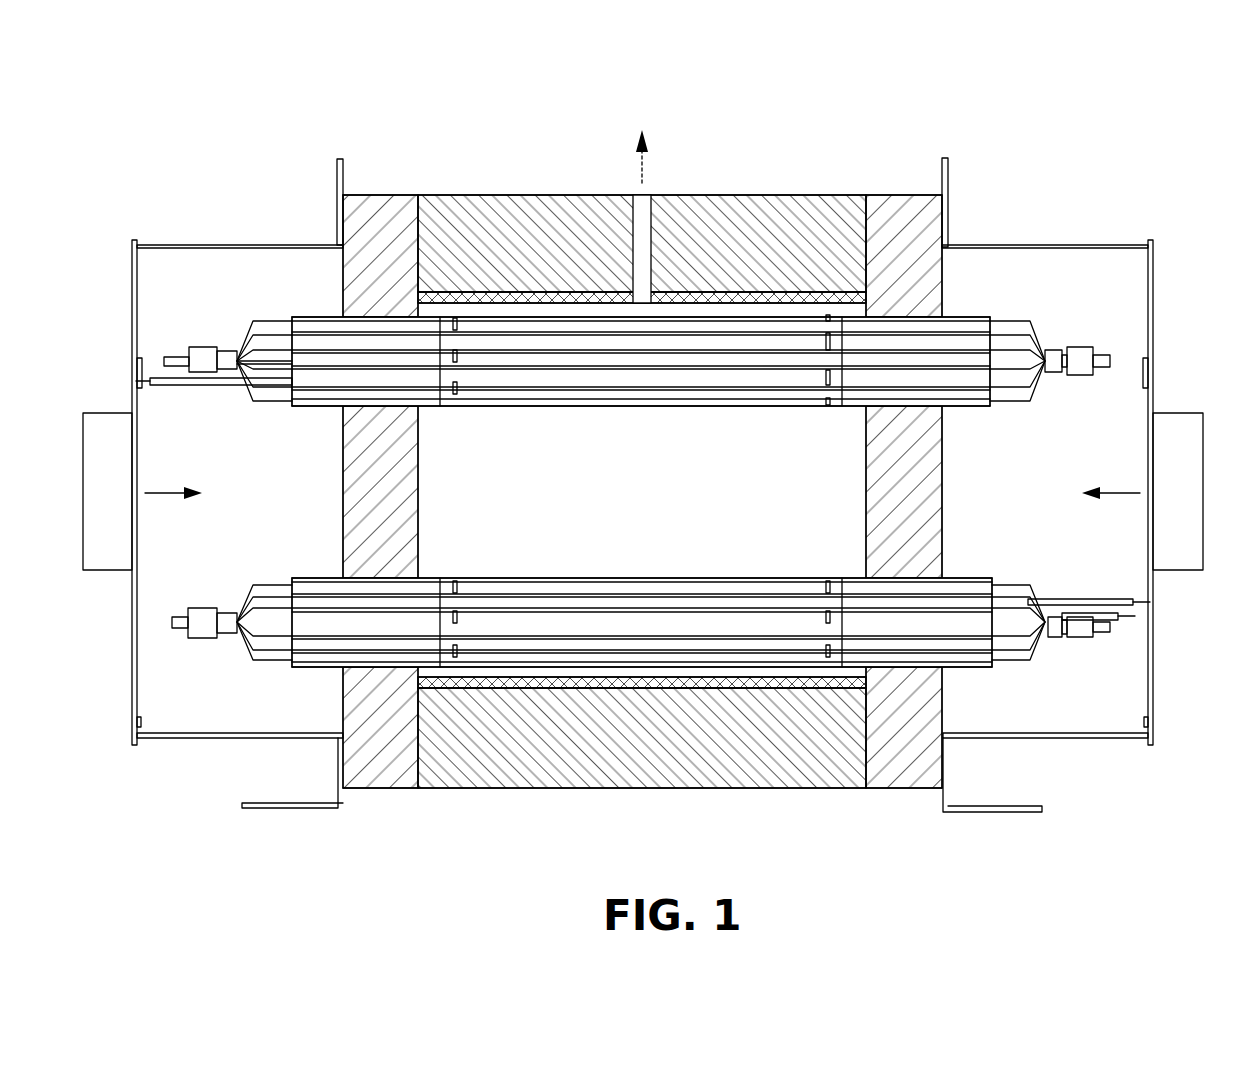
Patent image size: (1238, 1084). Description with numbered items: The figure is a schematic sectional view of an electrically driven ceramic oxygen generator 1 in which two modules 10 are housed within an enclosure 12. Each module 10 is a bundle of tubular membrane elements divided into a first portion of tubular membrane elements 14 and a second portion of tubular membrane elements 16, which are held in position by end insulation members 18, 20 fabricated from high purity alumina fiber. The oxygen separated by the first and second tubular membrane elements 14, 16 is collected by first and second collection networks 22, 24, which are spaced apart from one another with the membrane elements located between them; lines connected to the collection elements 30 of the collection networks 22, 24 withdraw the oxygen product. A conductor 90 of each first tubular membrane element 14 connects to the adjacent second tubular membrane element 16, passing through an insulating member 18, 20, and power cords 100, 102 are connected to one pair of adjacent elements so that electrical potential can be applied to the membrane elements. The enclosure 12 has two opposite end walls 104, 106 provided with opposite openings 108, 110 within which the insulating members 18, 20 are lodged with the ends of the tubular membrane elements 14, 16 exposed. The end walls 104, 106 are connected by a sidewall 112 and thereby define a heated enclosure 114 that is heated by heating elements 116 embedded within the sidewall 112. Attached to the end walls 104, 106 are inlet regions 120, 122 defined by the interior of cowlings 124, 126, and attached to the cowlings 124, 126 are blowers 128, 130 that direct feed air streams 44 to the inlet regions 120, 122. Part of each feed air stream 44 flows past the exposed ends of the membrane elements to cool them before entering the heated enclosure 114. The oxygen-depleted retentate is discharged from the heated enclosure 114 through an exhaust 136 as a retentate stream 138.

The ceramic oxygen generator 1 is at (352, 108).
The module 10 is at (572, 445).
The enclosure 12 is at (540, 160).
The first tubular membrane elements 14 is at (650, 328).
The second tubular membrane elements 16 is at (757, 318).
The first end insulation member 18 is at (938, 347).
The second end insulation member 20 is at (360, 372).
The first collection network 22 is at (1023, 418).
The second collection network 24 is at (278, 420).
The collection element 30 is at (205, 350).
The feed air stream 44 is at (170, 492).
The conductor 90 is at (458, 325).
The power cord 100 is at (238, 367).
The power cord 102 is at (183, 386).
The first end wall 104 is at (398, 494).
The second end wall 106 is at (898, 466).
The first opening 108 is at (385, 300).
The second opening 110 is at (393, 400).
The sidewall 112 is at (514, 800).
The heated enclosure 114 is at (757, 538).
The heating elements 116 is at (643, 692).
The first inlet region 120 is at (283, 540).
The second inlet region 122 is at (1082, 423).
The first cowling 124 is at (210, 258).
The second cowling 126 is at (1072, 258).
The first blower 128 is at (98, 435).
The second blower 130 is at (1182, 435).
The exhaust 136 is at (662, 208).
The retentate stream 138 is at (647, 162).